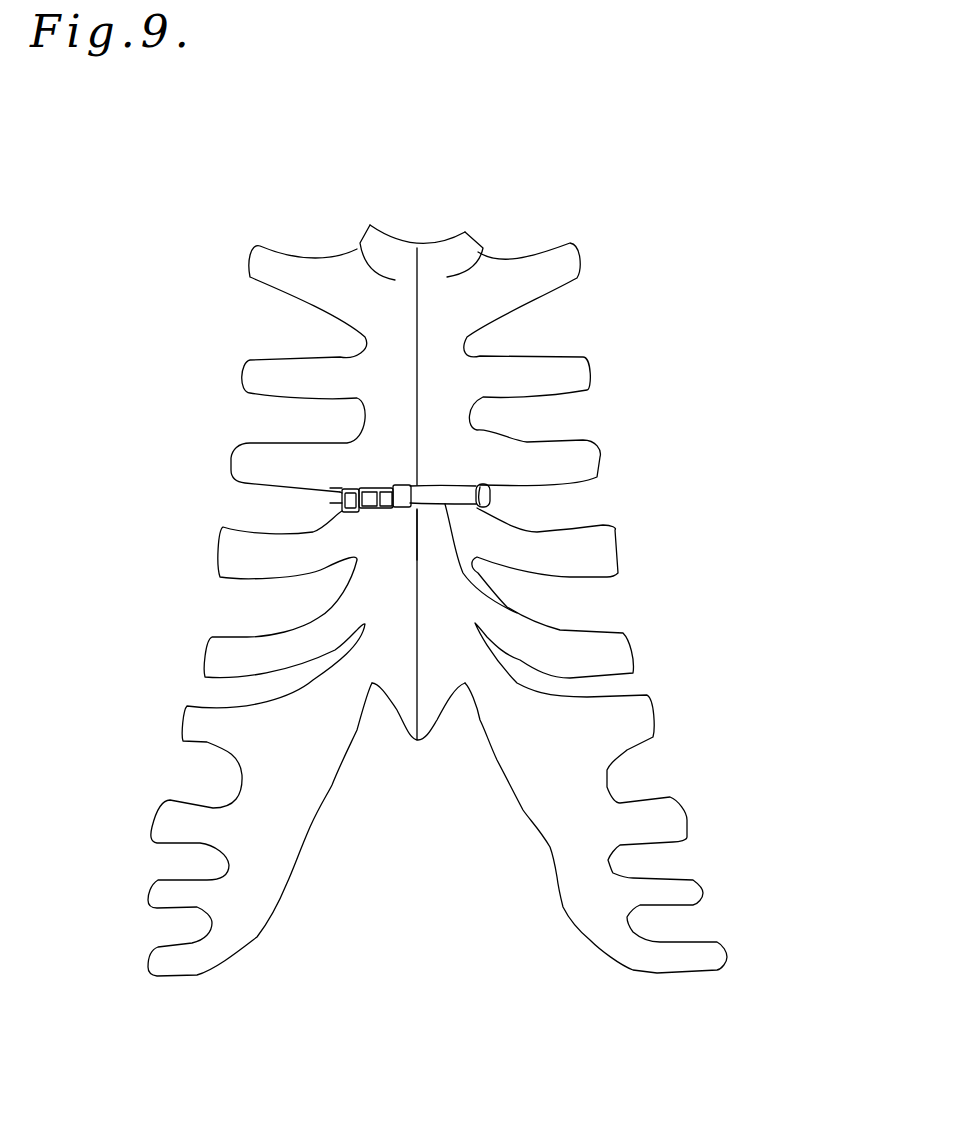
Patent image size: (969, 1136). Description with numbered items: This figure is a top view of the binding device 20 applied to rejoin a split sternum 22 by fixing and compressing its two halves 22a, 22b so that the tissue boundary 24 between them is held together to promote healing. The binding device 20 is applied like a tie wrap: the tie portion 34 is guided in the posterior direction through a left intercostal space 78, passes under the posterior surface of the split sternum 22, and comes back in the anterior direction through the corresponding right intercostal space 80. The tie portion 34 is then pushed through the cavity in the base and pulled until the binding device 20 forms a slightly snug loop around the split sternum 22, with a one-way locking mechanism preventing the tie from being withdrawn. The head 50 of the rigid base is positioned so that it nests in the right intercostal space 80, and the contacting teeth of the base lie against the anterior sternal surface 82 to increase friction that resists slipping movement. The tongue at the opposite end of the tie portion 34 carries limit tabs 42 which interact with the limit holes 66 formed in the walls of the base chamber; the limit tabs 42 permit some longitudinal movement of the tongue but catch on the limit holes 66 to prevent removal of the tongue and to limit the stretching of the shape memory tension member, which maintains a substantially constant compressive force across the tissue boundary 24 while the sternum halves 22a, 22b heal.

The binding device 20 is at (440, 478).
The split sternum 22 is at (440, 203).
The sternum half 22a is at (360, 250).
The sternum half 22b is at (478, 256).
The tissue boundary 24 is at (419, 648).
The tie portion 34 is at (517, 613).
The limit tabs 42 is at (382, 484).
The head 50 is at (341, 503).
The limit holes 66 is at (372, 484).
The left intercostal space 78 is at (540, 508).
The right intercostal space 80 is at (270, 505).
The anterior sternal surface 82 is at (407, 550).